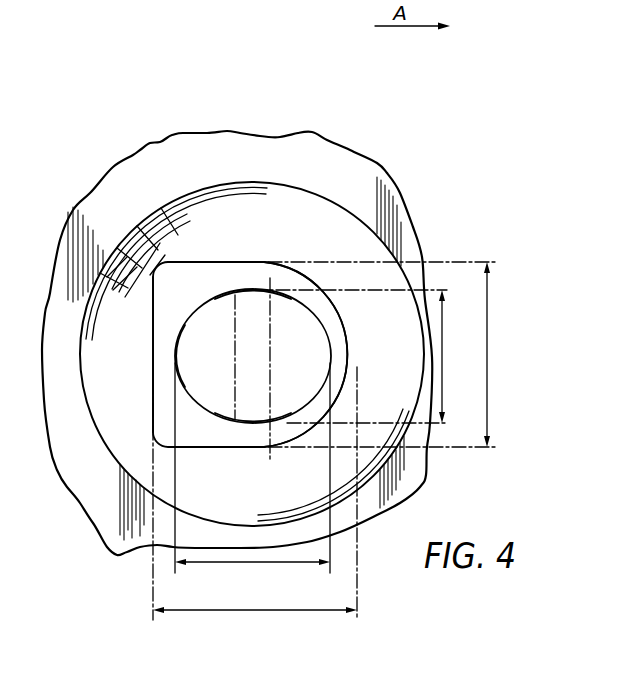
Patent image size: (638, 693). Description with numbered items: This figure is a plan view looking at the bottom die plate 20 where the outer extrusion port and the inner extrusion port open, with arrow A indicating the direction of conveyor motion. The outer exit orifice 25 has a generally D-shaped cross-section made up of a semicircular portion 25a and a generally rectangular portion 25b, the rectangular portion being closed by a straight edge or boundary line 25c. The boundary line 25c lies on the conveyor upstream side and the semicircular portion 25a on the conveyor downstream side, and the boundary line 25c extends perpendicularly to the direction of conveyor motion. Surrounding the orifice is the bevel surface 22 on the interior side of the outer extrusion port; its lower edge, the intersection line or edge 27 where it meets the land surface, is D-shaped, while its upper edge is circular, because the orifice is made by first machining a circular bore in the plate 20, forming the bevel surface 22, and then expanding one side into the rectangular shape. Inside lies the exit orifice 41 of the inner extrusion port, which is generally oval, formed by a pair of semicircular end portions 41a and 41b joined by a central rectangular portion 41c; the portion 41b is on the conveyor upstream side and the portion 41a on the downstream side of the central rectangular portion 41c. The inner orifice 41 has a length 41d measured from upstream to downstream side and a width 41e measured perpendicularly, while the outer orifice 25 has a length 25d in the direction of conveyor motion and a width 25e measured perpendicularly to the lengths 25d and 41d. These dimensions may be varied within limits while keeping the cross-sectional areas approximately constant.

The bottom die plate 20 is at (330, 153).
The bevel surface 22 is at (343, 222).
The intersection line or edge 27 is at (253, 130).
The outer exit orifice 25 is at (190, 270).
The semicircular portion 25a is at (348, 342).
The generally rectangular portion 25b is at (224, 272).
The straight edge or boundary line 25c is at (153, 390).
The length of outer exit orifice 25d is at (263, 610).
The width of outer exit orifice 25e is at (487, 362).
The exit orifice of inner extrusion port 41 is at (157, 262).
The semicircular end portion 41a is at (288, 305).
The semicircular end portion 41b is at (177, 360).
The central rectangular portion 41c is at (247, 418).
The length of inner exit orifice 41d is at (272, 562).
The width of inner exit orifice 41e is at (443, 380).